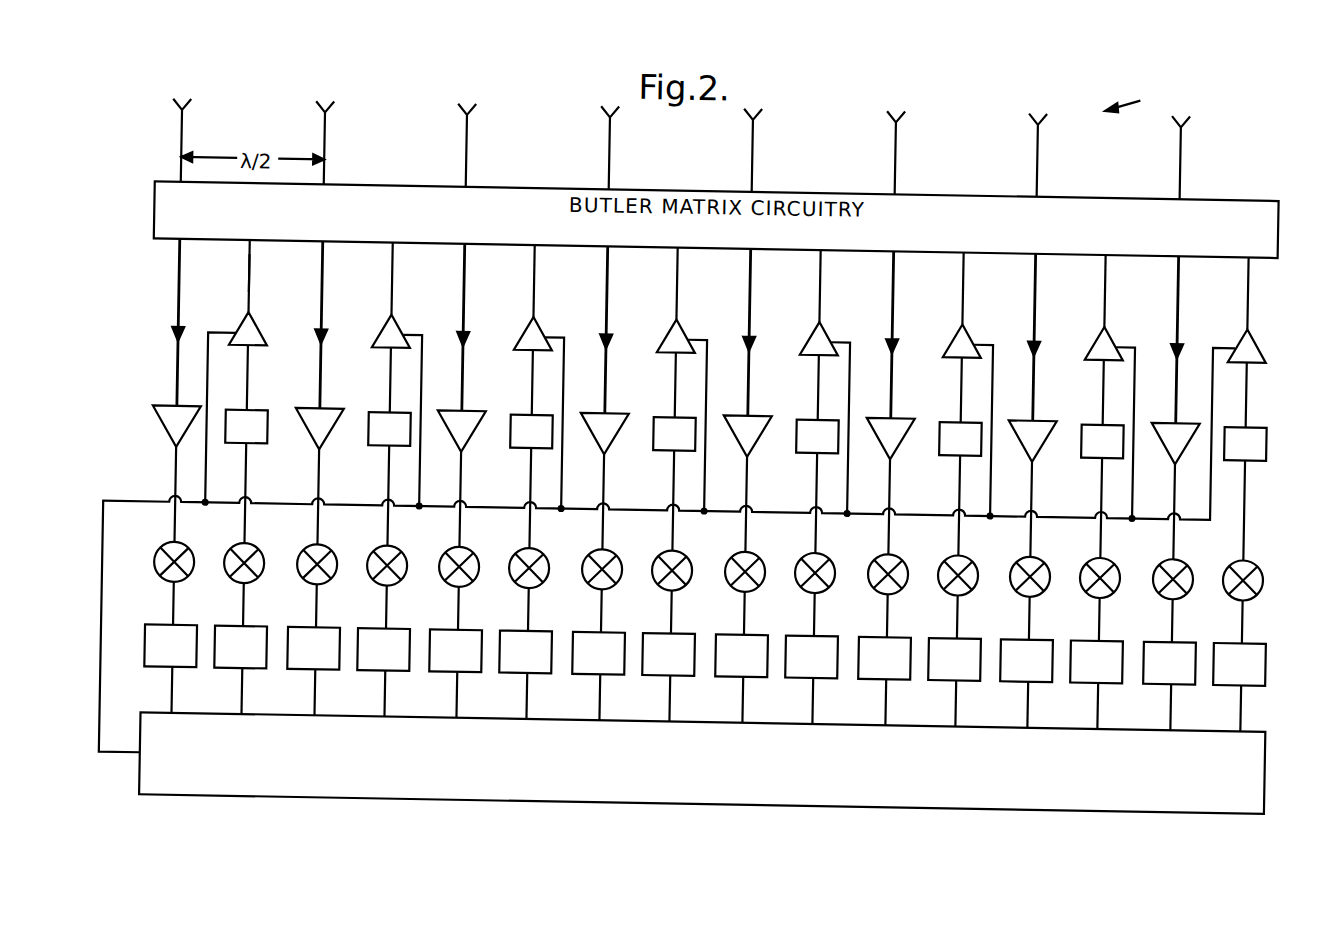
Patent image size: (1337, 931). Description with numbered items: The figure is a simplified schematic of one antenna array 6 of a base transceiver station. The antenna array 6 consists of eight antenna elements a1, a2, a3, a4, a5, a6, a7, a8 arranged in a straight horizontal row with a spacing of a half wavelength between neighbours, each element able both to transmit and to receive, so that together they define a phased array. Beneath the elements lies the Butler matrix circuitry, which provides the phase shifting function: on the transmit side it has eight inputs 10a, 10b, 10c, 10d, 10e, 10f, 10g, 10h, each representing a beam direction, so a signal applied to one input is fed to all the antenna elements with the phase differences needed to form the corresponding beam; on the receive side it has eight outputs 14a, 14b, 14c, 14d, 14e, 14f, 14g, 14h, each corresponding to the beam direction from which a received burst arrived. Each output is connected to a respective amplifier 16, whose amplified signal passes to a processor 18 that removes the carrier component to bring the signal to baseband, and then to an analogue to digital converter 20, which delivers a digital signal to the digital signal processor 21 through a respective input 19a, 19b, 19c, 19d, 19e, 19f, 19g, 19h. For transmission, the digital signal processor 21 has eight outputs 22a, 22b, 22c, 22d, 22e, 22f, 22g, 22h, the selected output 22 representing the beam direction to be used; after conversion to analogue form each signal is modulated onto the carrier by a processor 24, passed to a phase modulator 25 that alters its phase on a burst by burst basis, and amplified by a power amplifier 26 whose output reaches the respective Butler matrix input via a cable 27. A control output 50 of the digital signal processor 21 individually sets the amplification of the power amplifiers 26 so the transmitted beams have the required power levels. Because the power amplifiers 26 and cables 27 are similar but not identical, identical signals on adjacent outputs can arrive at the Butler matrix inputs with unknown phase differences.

The antenna array 6 is at (1131, 103).
The antenna element a1 is at (185, 110).
The antenna element a2 is at (328, 110).
The antenna element a3 is at (470, 110).
The antenna element a4 is at (613, 110).
The antenna element a5 is at (756, 110).
The antenna element a6 is at (899, 110).
The antenna element a7 is at (1041, 110).
The antenna element a8 is at (1184, 110).
The input of Butler matrix circuitry 10a is at (246, 250).
The input of Butler matrix circuitry 10b is at (389, 250).
The input of Butler matrix circuitry 10c is at (531, 250).
The input of Butler matrix circuitry 10d is at (674, 250).
The input of Butler matrix circuitry 10e is at (817, 250).
The input of Butler matrix circuitry 10f is at (960, 250).
The input of Butler matrix circuitry 10g is at (1102, 250).
The input of Butler matrix circuitry 10h is at (1245, 250).
The output of Butler matrix circuitry 14a is at (175, 260).
The output of Butler matrix circuitry 14b is at (318, 260).
The output of Butler matrix circuitry 14c is at (460, 260).
The output of Butler matrix circuitry 14d is at (603, 260).
The output of Butler matrix circuitry 14e is at (746, 260).
The output of Butler matrix circuitry 14f is at (889, 260).
The output of Butler matrix circuitry 14g is at (1031, 260).
The output of Butler matrix circuitry 14h is at (1174, 260).
The amplifier 16 is at (169, 415).
The processor 18 is at (161, 558).
The analogue to digital converter 20 is at (152, 634).
The output of digital signal processor 22 is at (222, 634).
The processor 24 is at (231, 558).
The phase modulator 25 is at (256, 452).
The power amplifier 26 is at (239, 336).
The cable 27 is at (246, 292).
The input of digital signal processor 19a is at (176, 709).
The input of digital signal processor 19b is at (319, 709).
The input of digital signal processor 19c is at (461, 709).
The input of digital signal processor 19d is at (604, 709).
The input of digital signal processor 19e is at (747, 709).
The input of digital signal processor 19f is at (890, 709).
The input of digital signal processor 19g is at (1032, 709).
The input of digital signal processor 19h is at (1175, 709).
The output of digital signal processor 22a is at (246, 709).
The output of digital signal processor 22b is at (389, 709).
The output of digital signal processor 22c is at (531, 709).
The output of digital signal processor 22d is at (674, 709).
The output of digital signal processor 22e is at (817, 709).
The output of digital signal processor 22f is at (960, 709).
The output of digital signal processor 22g is at (1102, 709).
The output of digital signal processor 22h is at (1245, 709).
The digital signal processor 21 is at (188, 805).
The output 50 is at (117, 765).